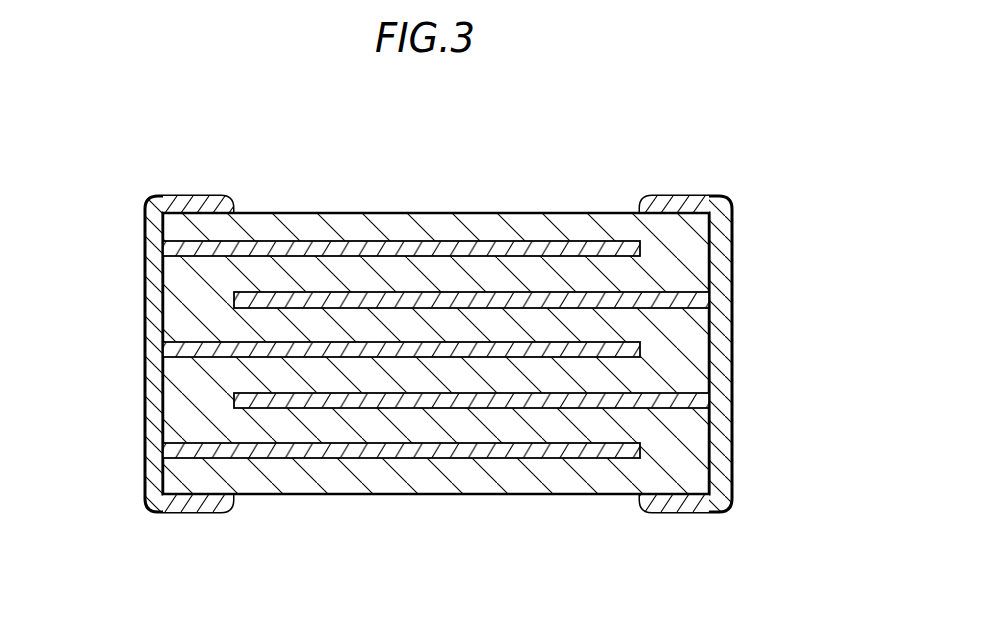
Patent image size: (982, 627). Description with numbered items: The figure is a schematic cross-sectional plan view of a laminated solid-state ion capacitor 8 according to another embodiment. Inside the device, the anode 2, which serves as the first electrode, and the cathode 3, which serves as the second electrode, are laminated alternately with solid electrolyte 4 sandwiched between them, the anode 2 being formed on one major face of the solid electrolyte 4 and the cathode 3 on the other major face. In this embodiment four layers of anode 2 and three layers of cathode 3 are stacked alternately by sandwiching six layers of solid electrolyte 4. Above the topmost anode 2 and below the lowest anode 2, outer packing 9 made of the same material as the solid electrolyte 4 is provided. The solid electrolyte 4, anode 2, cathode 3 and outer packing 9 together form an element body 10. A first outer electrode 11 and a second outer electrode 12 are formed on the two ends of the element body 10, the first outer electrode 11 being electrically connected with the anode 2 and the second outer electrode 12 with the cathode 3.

The anode 2 is at (605, 348).
The cathode 3 is at (705, 294).
The solid electrolyte 4 is at (250, 427).
The laminated solid-state ion capacitor 8 is at (436, 334).
The outer packing 9 is at (177, 231).
The element body 10 is at (325, 211).
The first outer electrode 11 is at (192, 199).
The second outer electrode 12 is at (715, 200).